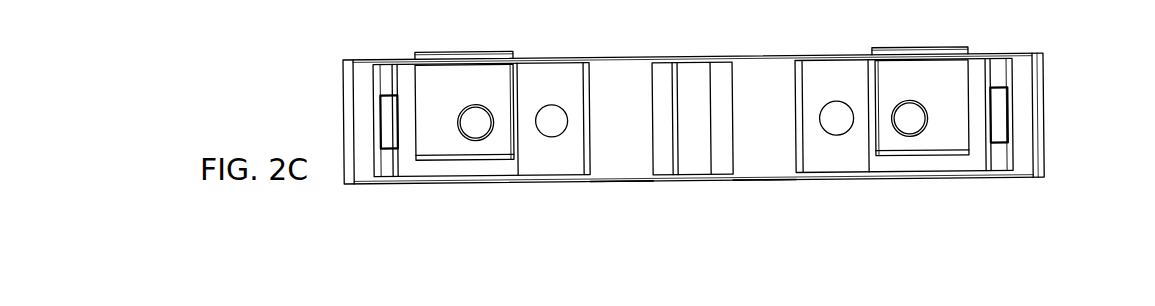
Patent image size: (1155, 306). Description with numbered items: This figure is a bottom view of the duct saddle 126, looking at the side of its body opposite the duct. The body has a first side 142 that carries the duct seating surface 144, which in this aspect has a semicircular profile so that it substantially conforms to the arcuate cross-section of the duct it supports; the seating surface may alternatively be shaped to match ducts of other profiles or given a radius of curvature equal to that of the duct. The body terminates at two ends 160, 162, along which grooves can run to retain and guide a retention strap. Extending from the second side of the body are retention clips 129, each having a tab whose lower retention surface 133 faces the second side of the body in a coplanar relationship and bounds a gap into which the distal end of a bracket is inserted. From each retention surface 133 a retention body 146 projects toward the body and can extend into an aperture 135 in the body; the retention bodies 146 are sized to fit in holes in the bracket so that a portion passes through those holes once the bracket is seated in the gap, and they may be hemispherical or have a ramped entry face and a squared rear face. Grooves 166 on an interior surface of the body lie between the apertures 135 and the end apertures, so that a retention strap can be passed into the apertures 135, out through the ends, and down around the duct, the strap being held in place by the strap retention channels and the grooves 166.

The end of the body 160 is at (334, 106).
The duct saddle 126 is at (1053, 45).
The end of the body 162 is at (1054, 112).
The duct seating surface 144 is at (619, 162).
The first side 142 is at (776, 192).
The aperture 135 is at (482, 167).
The retention surface 133 is at (495, 78).
The retention clip 129 is at (458, 37).
The retention body 146 is at (459, 112).
The groove 166 is at (389, 138).